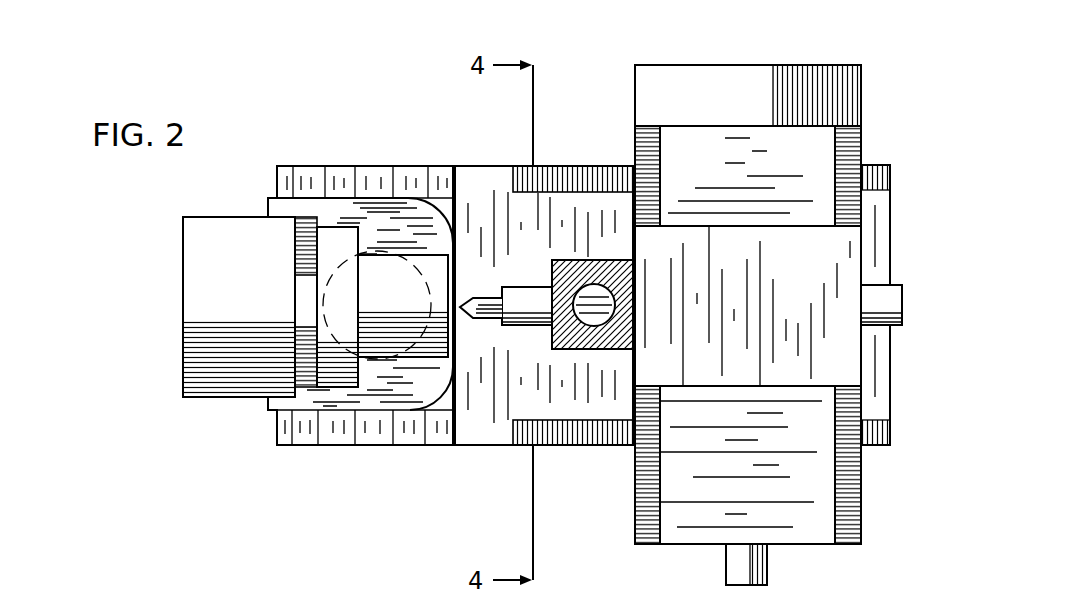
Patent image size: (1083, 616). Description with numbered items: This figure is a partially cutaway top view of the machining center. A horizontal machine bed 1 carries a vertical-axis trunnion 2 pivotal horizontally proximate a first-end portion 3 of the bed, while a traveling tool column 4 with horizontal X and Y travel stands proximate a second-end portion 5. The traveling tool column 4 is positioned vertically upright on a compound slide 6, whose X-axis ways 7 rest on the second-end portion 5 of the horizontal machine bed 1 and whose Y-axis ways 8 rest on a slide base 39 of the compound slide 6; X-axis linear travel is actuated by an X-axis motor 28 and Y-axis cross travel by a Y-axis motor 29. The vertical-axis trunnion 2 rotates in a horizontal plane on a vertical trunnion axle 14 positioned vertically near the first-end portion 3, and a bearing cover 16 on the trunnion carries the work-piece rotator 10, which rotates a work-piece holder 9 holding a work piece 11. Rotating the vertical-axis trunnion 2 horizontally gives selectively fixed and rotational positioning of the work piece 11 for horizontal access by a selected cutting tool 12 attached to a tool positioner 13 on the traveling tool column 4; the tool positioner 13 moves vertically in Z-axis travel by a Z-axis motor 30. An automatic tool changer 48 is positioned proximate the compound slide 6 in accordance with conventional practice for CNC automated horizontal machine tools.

The horizontal machine bed 1 is at (500, 446).
The vertical-axis trunnion 2 is at (323, 314).
The first-end portion 3 is at (277, 425).
The traveling tool column 4 is at (614, 306).
The second-end portion 5 is at (892, 362).
The compound slide 6 is at (780, 305).
The X-axis ways 7 is at (566, 178).
The Y-axis ways 8 is at (647, 143).
The work-piece holder 9 is at (338, 228).
The work-piece rotator 10 is at (228, 217).
The work piece 11 is at (423, 255).
The cutting tool 12 is at (466, 302).
The tool positioner 13 is at (517, 305).
The vertical trunnion axle 14 is at (342, 265).
The bearing cover 16 is at (395, 222).
The X-axis motor 28 is at (758, 570).
The Y-axis motor 29 is at (900, 285).
The Z-axis motor 30 is at (596, 312).
The slide base 39 is at (790, 473).
The automatic tool changer 48 is at (727, 75).